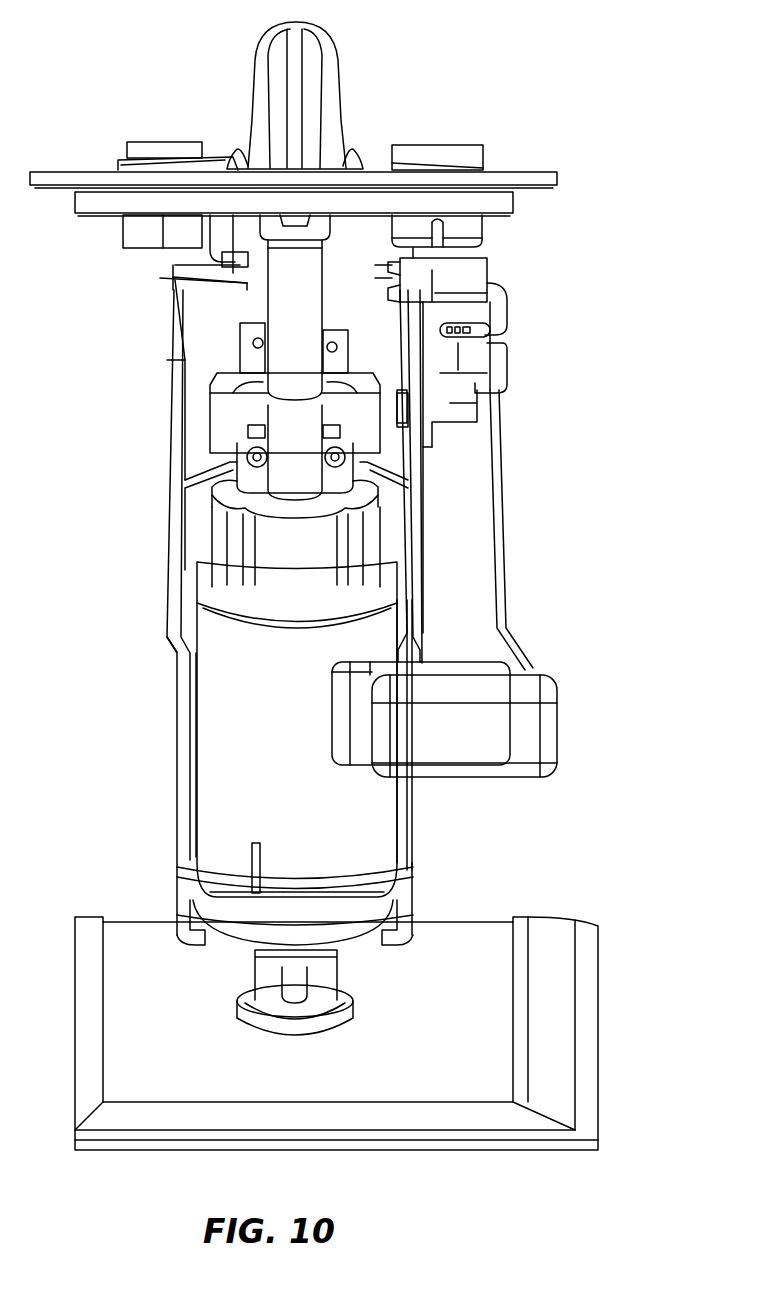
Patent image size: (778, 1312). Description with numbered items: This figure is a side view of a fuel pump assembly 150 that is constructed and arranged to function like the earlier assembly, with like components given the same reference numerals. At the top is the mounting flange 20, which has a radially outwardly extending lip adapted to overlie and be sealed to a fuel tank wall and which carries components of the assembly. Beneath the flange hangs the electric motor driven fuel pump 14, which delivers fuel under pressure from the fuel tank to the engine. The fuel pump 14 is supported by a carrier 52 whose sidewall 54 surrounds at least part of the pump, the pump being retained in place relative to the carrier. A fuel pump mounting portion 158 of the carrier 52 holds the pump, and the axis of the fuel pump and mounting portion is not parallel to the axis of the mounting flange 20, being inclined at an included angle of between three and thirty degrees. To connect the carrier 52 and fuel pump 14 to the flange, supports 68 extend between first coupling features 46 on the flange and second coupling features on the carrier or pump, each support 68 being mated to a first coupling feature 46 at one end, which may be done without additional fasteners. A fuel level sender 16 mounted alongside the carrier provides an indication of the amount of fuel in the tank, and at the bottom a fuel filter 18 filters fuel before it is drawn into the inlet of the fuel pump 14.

The fuel pump assembly 150 is at (538, 66).
The mounting flange 20 is at (45, 172).
The first coupling feature 46 is at (318, 232).
The support 68 is at (290, 322).
The fuel level sender 16 is at (519, 332).
The carrier 52 is at (163, 499).
The sidewall 54 is at (424, 510).
The fuel pump 14 is at (266, 703).
The fuel pump mounting portion 158 is at (179, 797).
The fuel filter 18 is at (600, 990).